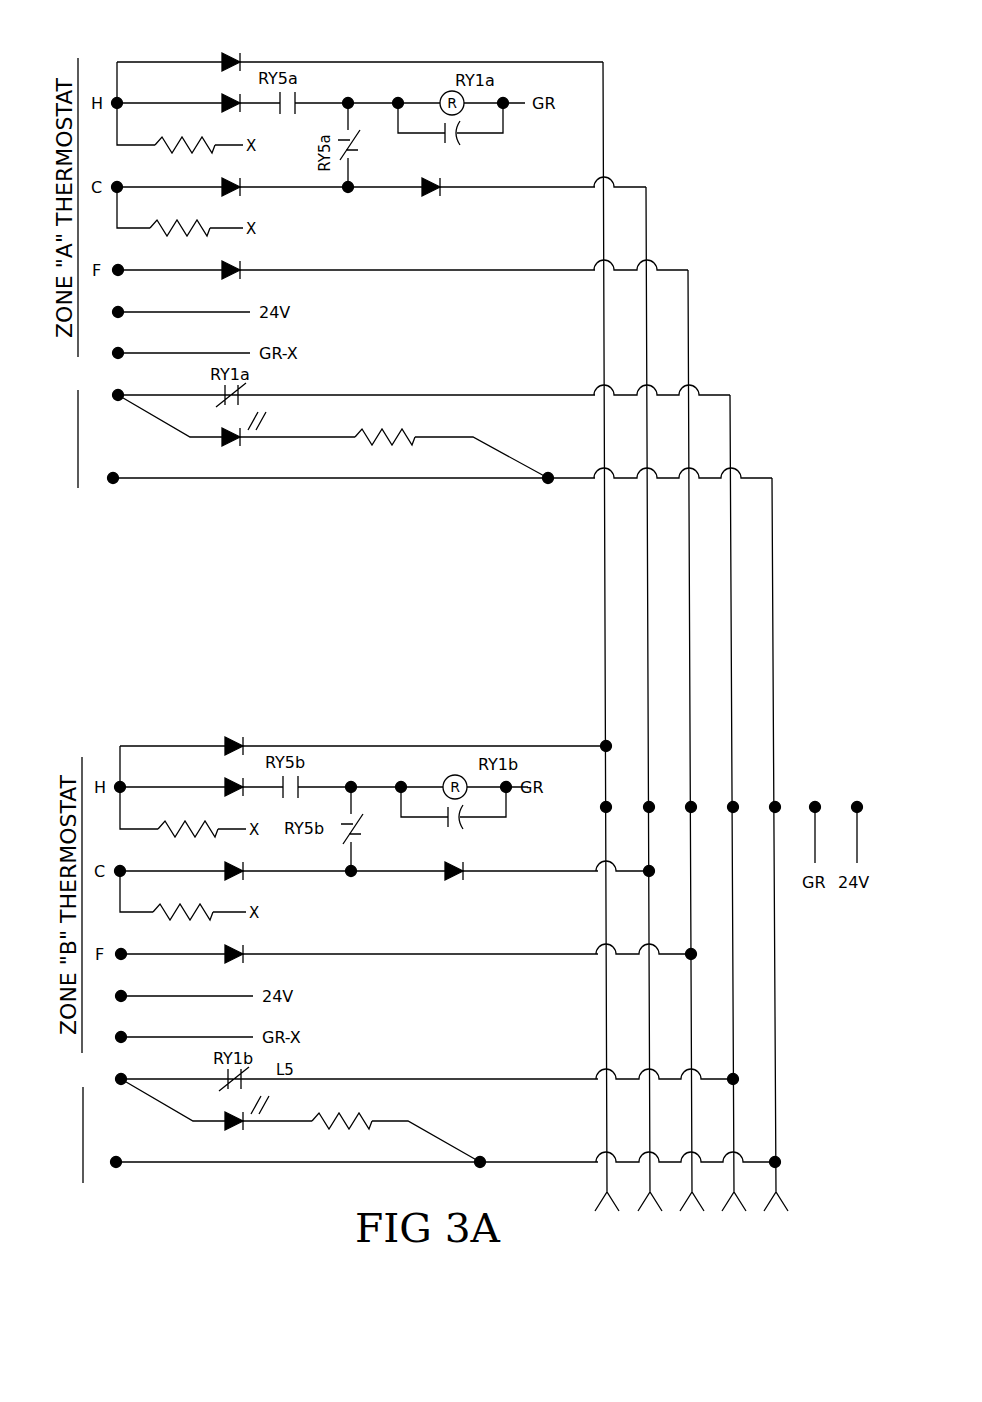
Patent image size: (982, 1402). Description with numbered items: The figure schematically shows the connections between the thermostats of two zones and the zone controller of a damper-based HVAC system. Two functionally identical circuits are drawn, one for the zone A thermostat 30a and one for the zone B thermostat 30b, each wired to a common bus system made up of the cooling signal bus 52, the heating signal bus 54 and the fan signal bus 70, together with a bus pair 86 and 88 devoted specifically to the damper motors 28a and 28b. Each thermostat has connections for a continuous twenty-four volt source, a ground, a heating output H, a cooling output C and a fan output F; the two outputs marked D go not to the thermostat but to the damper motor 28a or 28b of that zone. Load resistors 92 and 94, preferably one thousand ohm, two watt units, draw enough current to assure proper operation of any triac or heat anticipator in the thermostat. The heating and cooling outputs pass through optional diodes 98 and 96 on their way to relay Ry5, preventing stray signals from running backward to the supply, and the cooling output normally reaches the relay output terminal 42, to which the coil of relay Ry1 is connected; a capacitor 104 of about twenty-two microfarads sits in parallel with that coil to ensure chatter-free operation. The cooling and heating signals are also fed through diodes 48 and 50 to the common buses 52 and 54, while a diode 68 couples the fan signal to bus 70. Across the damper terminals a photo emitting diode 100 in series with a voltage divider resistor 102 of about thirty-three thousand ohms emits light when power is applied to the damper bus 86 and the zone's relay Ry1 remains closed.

The diode 50 is at (226, 54).
The diode 98 is at (227, 97).
The resistor 92 is at (213, 152).
The diode 96 is at (229, 178).
The resistor 94 is at (190, 236).
The output terminal 42 is at (349, 100).
The capacitor 104 is at (447, 142).
The diode 48 is at (424, 193).
The diode 68 is at (237, 280).
The photo emitting diode 100 is at (233, 446).
The resistor 102 is at (384, 430).
The thermostat 30a is at (82, 77).
The thermostat 30b is at (85, 761).
The damper motor 28a is at (78, 453).
The damper motor 28b is at (83, 1134).
The heating signal bus 54 is at (603, 806).
The cooling signal bus 52 is at (646, 806).
The fan signal bus 70 is at (688, 806).
The damper bus 86 is at (730, 806).
The damper bus 88 is at (772, 806).